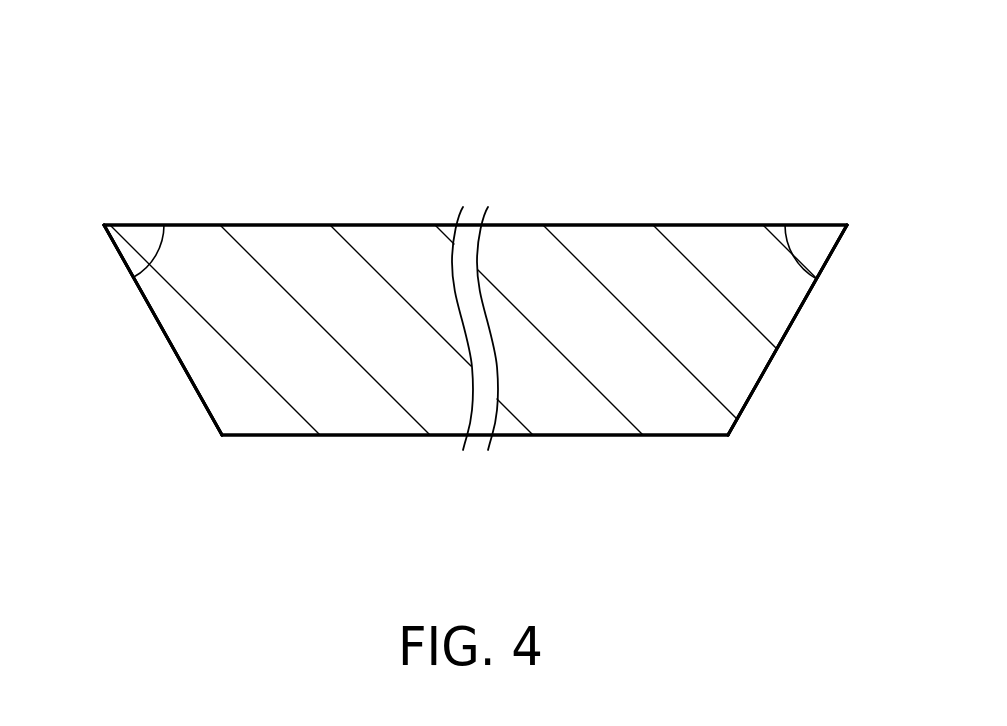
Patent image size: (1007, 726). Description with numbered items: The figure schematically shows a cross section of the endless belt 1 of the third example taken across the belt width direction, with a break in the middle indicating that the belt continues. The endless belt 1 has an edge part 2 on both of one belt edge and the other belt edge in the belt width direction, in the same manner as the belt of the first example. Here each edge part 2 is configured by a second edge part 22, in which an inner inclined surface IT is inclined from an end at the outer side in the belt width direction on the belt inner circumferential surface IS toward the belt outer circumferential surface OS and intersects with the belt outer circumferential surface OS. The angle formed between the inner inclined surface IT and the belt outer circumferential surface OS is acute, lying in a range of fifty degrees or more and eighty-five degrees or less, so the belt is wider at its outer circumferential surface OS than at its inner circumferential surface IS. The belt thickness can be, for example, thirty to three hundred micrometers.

The endless belt 1 is at (717, 155).
The second edge part 22 is at (182, 367).
The edge part 2 is at (472, 349).
The inner inclined surface IT is at (150, 308).
The belt outer circumferential surface OS is at (318, 225).
The belt inner circumferential surface IS is at (290, 435).